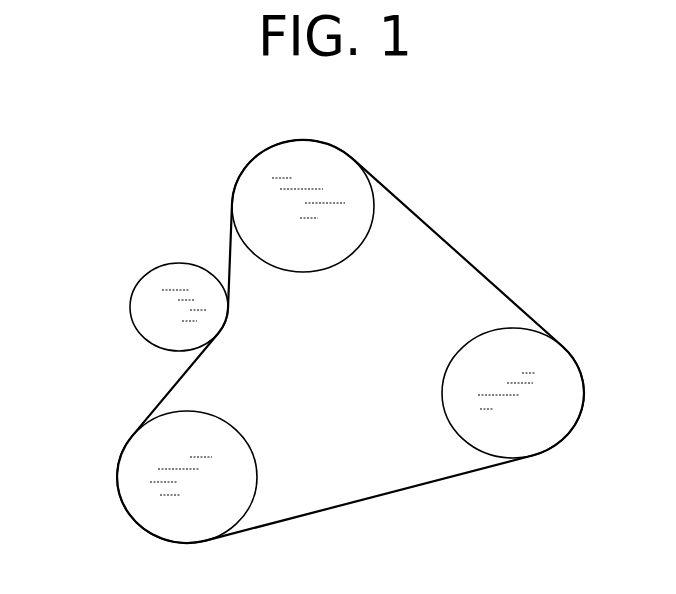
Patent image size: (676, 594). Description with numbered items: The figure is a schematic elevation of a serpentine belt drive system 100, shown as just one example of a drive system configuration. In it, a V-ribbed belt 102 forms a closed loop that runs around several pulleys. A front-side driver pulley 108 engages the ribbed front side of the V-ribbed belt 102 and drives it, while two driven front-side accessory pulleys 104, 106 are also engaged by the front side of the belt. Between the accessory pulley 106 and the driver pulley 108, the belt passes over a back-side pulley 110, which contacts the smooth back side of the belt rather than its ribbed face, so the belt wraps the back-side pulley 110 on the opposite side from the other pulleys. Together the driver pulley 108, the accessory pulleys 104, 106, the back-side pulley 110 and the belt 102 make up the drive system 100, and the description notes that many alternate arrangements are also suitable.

The serpentine belt drive system 100 is at (483, 232).
The V-ribbed belt 102 is at (437, 485).
The driven front-side accessory pulley 104 is at (557, 408).
The driven front-side accessory pulley 106 is at (332, 243).
The front-side driver pulley 108 is at (217, 440).
The back-side pulley 110 is at (155, 322).